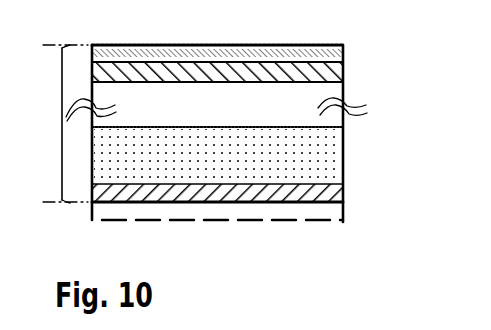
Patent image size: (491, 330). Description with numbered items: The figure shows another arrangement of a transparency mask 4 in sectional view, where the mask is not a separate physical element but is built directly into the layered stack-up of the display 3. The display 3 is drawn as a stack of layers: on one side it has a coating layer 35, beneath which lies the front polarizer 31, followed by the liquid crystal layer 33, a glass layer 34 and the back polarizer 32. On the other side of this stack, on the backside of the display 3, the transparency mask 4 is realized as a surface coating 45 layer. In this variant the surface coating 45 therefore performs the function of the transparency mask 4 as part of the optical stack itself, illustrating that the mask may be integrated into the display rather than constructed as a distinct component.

The display 3 is at (62, 126).
The coating layer 35 is at (348, 44).
The front polarizer 31 is at (348, 72).
The liquid crystal layer 33 is at (287, 116).
The glass layer 34 is at (325, 157).
The back polarizer 32 is at (350, 197).
The surface coating 45 is at (271, 223).
The transparency mask 4 is at (344, 216).